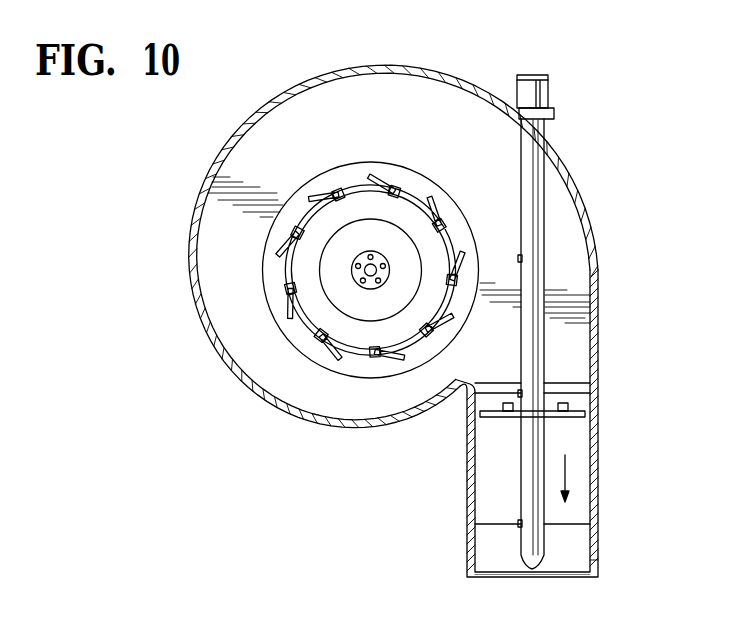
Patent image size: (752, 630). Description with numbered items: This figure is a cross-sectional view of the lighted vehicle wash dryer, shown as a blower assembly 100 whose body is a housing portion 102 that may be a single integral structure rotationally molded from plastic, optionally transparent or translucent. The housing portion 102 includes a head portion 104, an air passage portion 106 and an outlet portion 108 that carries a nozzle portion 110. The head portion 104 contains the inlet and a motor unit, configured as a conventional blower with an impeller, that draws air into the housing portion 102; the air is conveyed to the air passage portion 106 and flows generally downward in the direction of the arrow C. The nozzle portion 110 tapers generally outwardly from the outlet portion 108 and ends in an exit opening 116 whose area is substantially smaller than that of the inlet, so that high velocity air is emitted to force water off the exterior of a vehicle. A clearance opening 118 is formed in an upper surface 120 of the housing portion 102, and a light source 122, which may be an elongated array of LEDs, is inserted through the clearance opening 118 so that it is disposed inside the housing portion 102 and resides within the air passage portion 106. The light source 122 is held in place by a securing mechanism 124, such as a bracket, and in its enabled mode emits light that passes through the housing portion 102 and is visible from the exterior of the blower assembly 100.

The blower assembly 100 is at (478, 63).
The housing portion 102 is at (292, 90).
The head portion 104 is at (205, 178).
The air passage portion 106 is at (585, 506).
The outlet portion 108 is at (598, 542).
The nozzle portion 110 is at (598, 565).
The exit opening 116 is at (573, 580).
The clearance opening 118 is at (518, 128).
The upper surface 120 is at (485, 115).
The light source 122 is at (532, 282).
The securing mechanism 124 is at (490, 418).
The arrow C is at (567, 475).